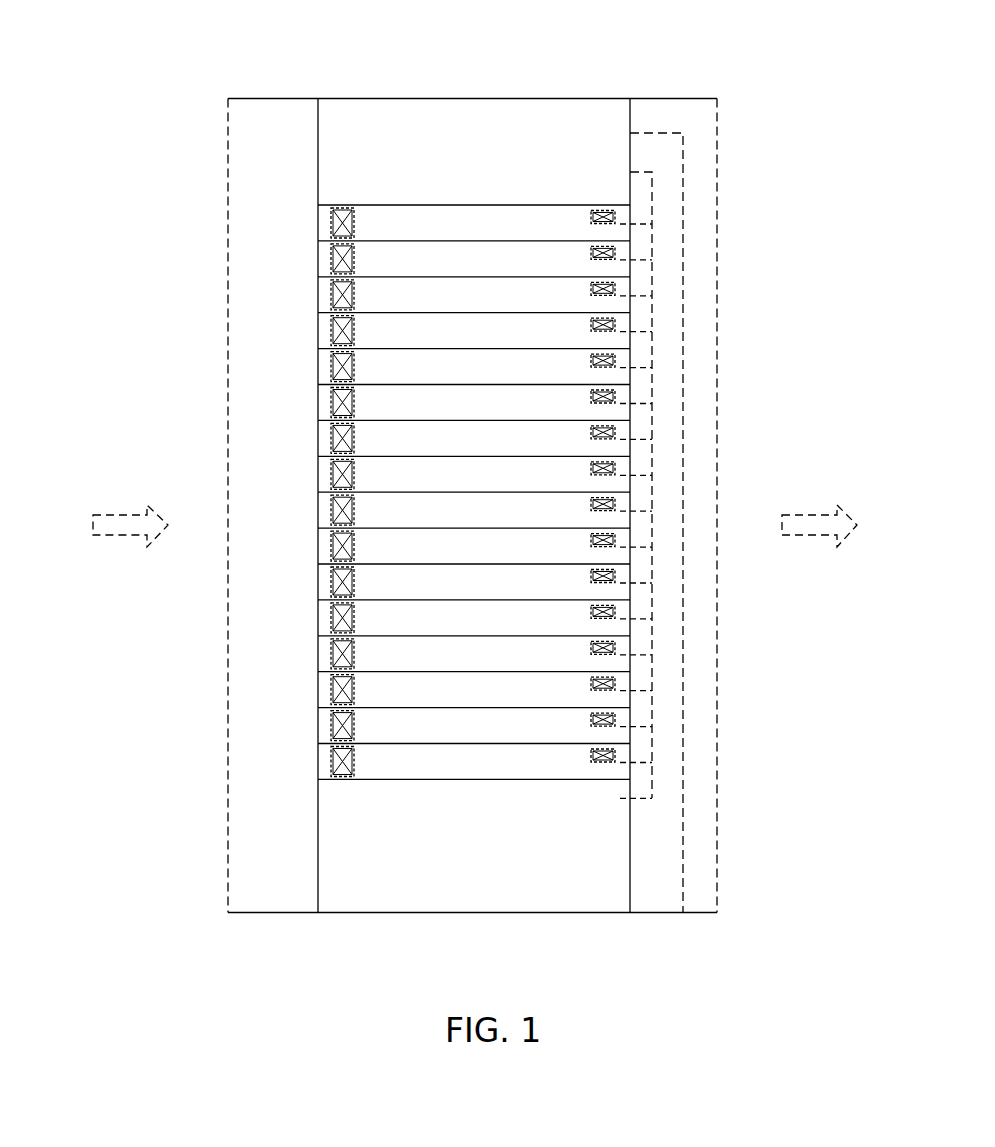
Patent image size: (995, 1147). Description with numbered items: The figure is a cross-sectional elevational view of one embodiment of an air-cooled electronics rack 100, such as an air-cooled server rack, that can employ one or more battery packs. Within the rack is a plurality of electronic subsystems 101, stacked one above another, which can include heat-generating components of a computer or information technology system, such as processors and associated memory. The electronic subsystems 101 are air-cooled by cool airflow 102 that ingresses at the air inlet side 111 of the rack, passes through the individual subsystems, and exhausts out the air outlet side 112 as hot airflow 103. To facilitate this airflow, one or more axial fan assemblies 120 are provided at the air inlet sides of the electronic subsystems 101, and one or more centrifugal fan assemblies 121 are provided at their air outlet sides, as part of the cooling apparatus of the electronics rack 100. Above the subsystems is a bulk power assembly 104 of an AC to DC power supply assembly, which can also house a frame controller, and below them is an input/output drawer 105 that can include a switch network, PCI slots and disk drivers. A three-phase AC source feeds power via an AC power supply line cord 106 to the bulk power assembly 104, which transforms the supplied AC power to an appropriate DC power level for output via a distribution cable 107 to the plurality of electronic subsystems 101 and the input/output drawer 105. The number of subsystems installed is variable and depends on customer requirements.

The air-cooled electronics rack 100 is at (387, 99).
The electronic subsystems 101 is at (325, 298).
The cool airflow 102 is at (120, 515).
The hot airflow 103 is at (810, 515).
The bulk power assembly 104 is at (497, 139).
The input/output drawer 105 is at (498, 868).
The AC power supply line cord 106 is at (683, 912).
The distribution cable 107 is at (652, 188).
The air inlet side 111 is at (228, 681).
The air outlet side 112 is at (717, 665).
The axial fan assemblies 120 is at (355, 298).
The centrifugal fan assemblies 121 is at (590, 290).